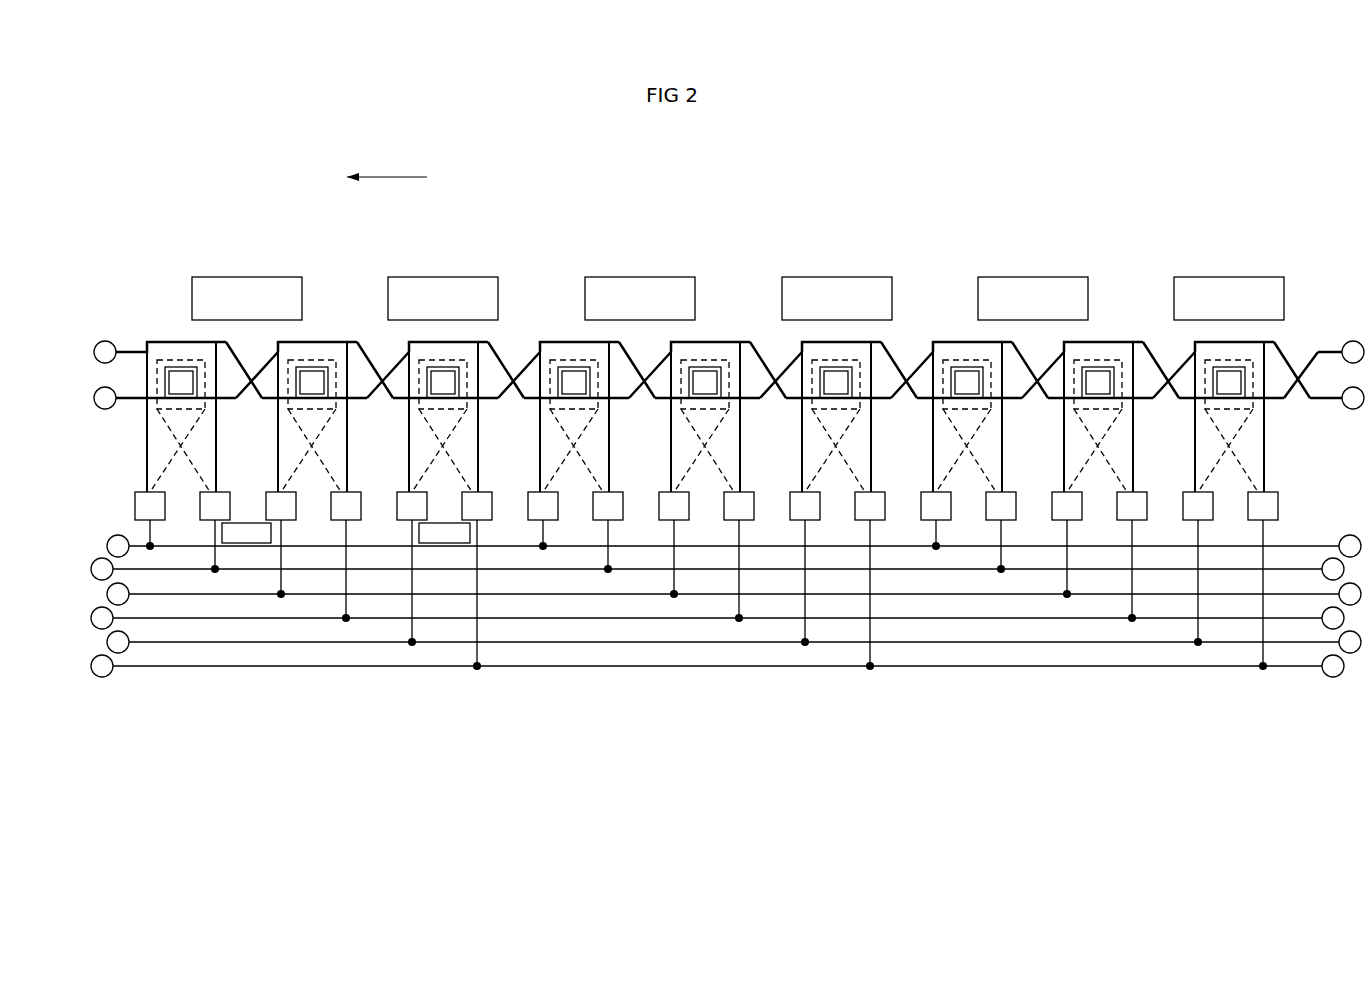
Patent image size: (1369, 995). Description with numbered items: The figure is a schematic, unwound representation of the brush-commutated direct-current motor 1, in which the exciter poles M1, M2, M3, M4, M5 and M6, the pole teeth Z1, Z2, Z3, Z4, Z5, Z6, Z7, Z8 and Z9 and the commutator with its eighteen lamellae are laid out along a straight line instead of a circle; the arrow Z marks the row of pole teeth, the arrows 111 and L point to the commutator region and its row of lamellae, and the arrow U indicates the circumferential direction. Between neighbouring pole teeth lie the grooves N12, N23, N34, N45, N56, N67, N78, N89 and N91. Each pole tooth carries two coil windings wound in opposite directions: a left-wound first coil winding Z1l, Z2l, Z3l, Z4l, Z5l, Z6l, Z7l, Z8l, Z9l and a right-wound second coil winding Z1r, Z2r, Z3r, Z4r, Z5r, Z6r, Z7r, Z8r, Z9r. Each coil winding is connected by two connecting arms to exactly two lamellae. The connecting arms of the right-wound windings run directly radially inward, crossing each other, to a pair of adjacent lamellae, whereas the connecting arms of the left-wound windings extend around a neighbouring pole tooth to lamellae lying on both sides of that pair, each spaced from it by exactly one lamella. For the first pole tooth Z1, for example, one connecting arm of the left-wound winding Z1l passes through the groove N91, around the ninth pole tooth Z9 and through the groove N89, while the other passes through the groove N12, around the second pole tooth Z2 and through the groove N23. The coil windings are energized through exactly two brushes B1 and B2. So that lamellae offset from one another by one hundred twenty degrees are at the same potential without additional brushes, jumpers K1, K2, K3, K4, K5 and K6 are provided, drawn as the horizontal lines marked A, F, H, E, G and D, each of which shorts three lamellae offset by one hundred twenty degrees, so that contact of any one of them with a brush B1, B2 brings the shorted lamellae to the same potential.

The brush-commutated direct-current motor 1 is at (915, 190).
The circumferential direction U is at (387, 173).
The tooth row / stator Z is at (90, 373).
The circuit board 111 is at (117, 477).
The terminal strip L is at (123, 507).
The groove N12 is at (219, 336).
The groove N23 is at (372, 340).
The slot between teeth Z3 and Z4 N34 is at (497, 407).
The slot between teeth Z4 and Z5 N45 is at (626, 407).
The slot between teeth Z5 and Z6 N56 is at (760, 407).
The slot between teeth Z6 and Z7 N67 is at (890, 407).
The slot between teeth Z7 and Z8 N78 is at (1020, 407).
The groove N89 is at (1150, 410).
The groove N91 is at (1286, 412).
The exciter pole M1 is at (264, 277).
The exciter pole M2 is at (440, 277).
The exciter pole M3 is at (611, 277).
The exciter pole M4 is at (827, 277).
The exciter pole M5 is at (1028, 277).
The exciter pole M6 is at (1222, 277).
The first pole tooth Z1 is at (187, 378).
The left-wound coil winding Z1l is at (164, 377).
The right-wound coil winding Z1r is at (182, 361).
The second pole tooth Z2 is at (296, 378).
The left-wound coil winding Z2l is at (325, 371).
The right-wound coil winding Z2r is at (308, 361).
The third pole tooth Z3 is at (432, 378).
The left-wound coil winding Z3l is at (460, 382).
The right-wound coil winding Z3r is at (457, 361).
The pole tooth Z4 is at (574, 417).
The left-wound coil winding Z4l is at (565, 372).
The right-wound coil winding Z4r is at (575, 361).
The pole tooth Z5 is at (705, 417).
The left-wound coil winding Z5l is at (720, 372).
The right-wound coil winding Z5r is at (700, 361).
The pole tooth Z6 is at (836, 417).
The left-wound coil winding Z6l is at (853, 388).
The right-wound coil winding Z6r is at (852, 359).
The pole tooth Z7 is at (967, 417).
The left-wound coil winding Z7l is at (970, 371).
The right-wound coil winding Z7r is at (958, 361).
The eighth pole tooth Z8 is at (1098, 417).
The left-wound coil winding Z8l is at (1112, 371).
The right-wound coil winding Z8r is at (1093, 359).
The ninth pole tooth Z9 is at (1229, 417).
The left-wound coil winding Z9l is at (1248, 377).
The right-wound coil winding Z9r is at (1247, 362).
The brush B1 is at (262, 523).
The brush B2 is at (457, 543).
The jumper K1 is at (170, 548).
The jumper K2 is at (225, 571).
The jumper K3 is at (258, 596).
The jumper K4 is at (304, 620).
The jumper K5 is at (368, 644).
The jumper K6 is at (424, 668).
The connection point A is at (734, 545).
The axis of rotation D is at (717, 665).
The connection point E is at (717, 617).
The connection point F is at (717, 568).
The connection point G is at (734, 641).
The connection point H is at (734, 593).